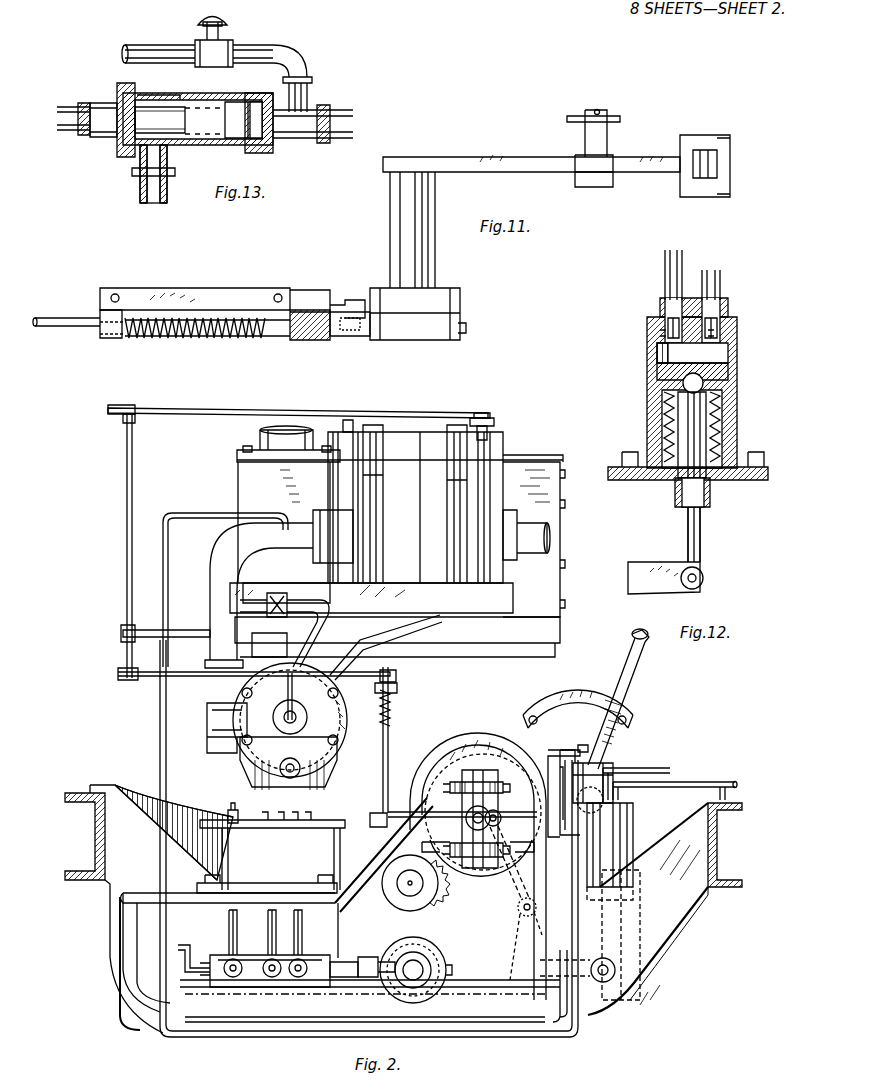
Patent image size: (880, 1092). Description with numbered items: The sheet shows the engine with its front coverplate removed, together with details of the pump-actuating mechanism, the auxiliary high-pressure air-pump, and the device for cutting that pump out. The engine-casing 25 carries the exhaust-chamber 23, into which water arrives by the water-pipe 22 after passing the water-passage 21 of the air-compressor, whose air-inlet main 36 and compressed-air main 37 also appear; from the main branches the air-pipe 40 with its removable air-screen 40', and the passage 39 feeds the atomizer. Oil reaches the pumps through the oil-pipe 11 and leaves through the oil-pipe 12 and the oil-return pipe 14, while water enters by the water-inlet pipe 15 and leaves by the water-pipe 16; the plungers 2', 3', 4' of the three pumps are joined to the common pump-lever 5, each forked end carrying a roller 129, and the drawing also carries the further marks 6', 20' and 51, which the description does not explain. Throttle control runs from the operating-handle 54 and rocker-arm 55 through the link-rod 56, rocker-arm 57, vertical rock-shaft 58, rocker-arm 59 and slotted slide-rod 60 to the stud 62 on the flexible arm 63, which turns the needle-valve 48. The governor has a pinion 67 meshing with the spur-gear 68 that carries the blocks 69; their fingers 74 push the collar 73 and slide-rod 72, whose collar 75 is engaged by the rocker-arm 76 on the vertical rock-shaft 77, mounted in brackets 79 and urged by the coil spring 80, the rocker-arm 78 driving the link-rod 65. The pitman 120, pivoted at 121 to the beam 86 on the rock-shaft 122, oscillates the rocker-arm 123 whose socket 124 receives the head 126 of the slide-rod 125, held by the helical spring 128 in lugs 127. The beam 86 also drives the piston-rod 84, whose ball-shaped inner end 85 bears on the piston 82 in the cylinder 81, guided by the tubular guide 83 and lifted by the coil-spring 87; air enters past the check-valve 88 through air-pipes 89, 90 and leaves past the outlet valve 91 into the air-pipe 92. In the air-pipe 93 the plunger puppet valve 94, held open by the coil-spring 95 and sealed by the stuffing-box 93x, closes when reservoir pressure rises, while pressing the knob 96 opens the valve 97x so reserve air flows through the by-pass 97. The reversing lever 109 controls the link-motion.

In FIG. 2, the plunger 2' is at (305, 943).
In FIG. 2, the plunger 3' is at (277, 943).
In FIG. 2, the plunger 4' is at (239, 943).
In FIG. 2, the pump-lever 5 is at (313, 985).
In FIG. 2, the valve box 6' is at (271, 856).
In FIG. 2, the oil-pipe 11 is at (300, 770).
In FIG. 2, the oil-pipe 12 is at (300, 828).
In FIG. 2, the oil-return pipe 14 is at (282, 825).
In FIG. 2, the water-inlet pipe 15 is at (205, 832).
In FIG. 2, the water-pipe 16 is at (232, 815).
In FIG. 2, the stud 20' is at (510, 430).
In FIG. 2, the water-passage 21 is at (520, 492).
In FIG. 2, the water-pipe 22 is at (350, 425).
In FIG. 2, the exhaust-chamber 23 is at (240, 463).
In FIG. 2, the engine-casing 25 is at (569, 602).
In FIG. 2, the air-inlet main 36 is at (540, 540).
In FIG. 2, the compressed-air main 37 is at (210, 548).
In FIG. 2, the passage 39 is at (208, 722).
In FIG. 2, the air-pipe 40 is at (293, 630).
In FIG. 2, the air-screen 40' is at (284, 592).
In FIG. 2, the needle-valve 48 is at (297, 718).
In FIG. 11, the bar 51 is at (218, 292).
In FIG. 2, the operating-handle 54 is at (490, 423).
In FIG. 2, the rocker-arm 55 is at (477, 412).
In FIG. 2, the link-rod 56 is at (322, 410).
In FIG. 2, the rocker-arm 57 is at (110, 415).
In FIG. 2, the vertical rock-shaft 58 is at (135, 440).
In FIG. 2, the rocker-arm 59 is at (122, 675).
In FIG. 2, the slide-rod 60 is at (150, 678).
In FIG. 2, the stud 62 is at (290, 690).
In FIG. 2, the flexible arm 63 is at (293, 690).
In FIG. 2, the link-rod 65 is at (380, 676).
In FIG. 2, the pinion 67 is at (418, 895).
In FIG. 2, the spur-gear 68 is at (498, 870).
In FIG. 2, the blocks 69 is at (482, 770).
In FIG. 2, the slide-rod 72 is at (470, 822).
In FIG. 2, the collar 73 is at (498, 826).
In FIG. 2, the fingers 74 is at (474, 850).
In FIG. 2, the collar 75 is at (490, 815).
In FIG. 2, the rocker-arm 76 is at (420, 848).
In FIG. 2, the vertical rock-shaft 77 is at (390, 745).
In FIG. 2, the rocker-arm 78 is at (430, 614).
In FIG. 2, the brackets 79 is at (388, 692).
In FIG. 2, the coil spring 80 is at (392, 708).
In FIG. 12, the cylinder 81 is at (738, 378).
In FIG. 2, the cylinder 81 is at (480, 770).
In FIG. 12, the piston 82 is at (728, 360).
In FIG. 12, the tubular guide 83 is at (710, 500).
In FIG. 12, the piston-rod 84 is at (700, 543).
In FIG. 2, the piston-rod 84 is at (650, 945).
In FIG. 12, the inner end 85 is at (652, 368).
In FIG. 11, the beam 86 is at (628, 160).
In FIG. 12, the beam 86 is at (652, 568).
In FIG. 2, the beam 86 is at (562, 1000).
In FIG. 12, the coil-spring 87 is at (725, 410).
In FIG. 12, the check-valve 88 is at (660, 334).
In FIG. 13, the air-pipe 89 is at (30, 138).
In FIG. 2, the air-pipe 89 is at (160, 758).
In FIG. 13, the air-pipe 90 is at (175, 185).
In FIG. 12, the air-pipe 90 is at (675, 262).
In FIG. 2, the air-pipe 90 is at (605, 775).
In FIG. 12, the outlet valve 91 is at (737, 326).
In FIG. 12, the air-pipe 92 is at (720, 282).
In FIG. 2, the air-pipe 92 is at (730, 782).
In FIG. 13, the air-pipe 93 is at (352, 125).
In FIG. 2, the air-pipe 93 is at (670, 768).
In FIG. 13, the stuffing-box 93x is at (180, 86).
In FIG. 13, the plunger puppet valve 94 is at (240, 118).
In FIG. 13, the coil-spring 95 is at (232, 108).
In FIG. 2, the coil-spring 95 is at (615, 760).
In FIG. 13, the knob 96 is at (222, 24).
In FIG. 13, the by-pass 97 is at (130, 66).
In FIG. 2, the by-pass 97 is at (565, 712).
In FIG. 13, the valve 97x is at (200, 44).
In FIG. 2, the valve 97x is at (586, 739).
In FIG. 2, the reversing lever 109 is at (645, 672).
In FIG. 2, the pitman 120 is at (522, 912).
In FIG. 2, the pivot 121 is at (555, 970).
In FIG. 11, the rock-shaft 122 is at (440, 272).
In FIG. 2, the rock-shaft 122 is at (450, 1000).
In FIG. 11, the rocker-arm 123 is at (375, 330).
In FIG. 2, the rocker-arm 123 is at (410, 972).
In FIG. 11, the socket 124 is at (352, 306).
In FIG. 2, the socket 124 is at (370, 958).
In FIG. 11, the slide-rod 125 is at (80, 330).
In FIG. 2, the slide-rod 125 is at (205, 1000).
In FIG. 11, the head 126 is at (330, 334).
In FIG. 2, the head 126 is at (356, 985).
In FIG. 11, the lugs 127 is at (305, 308).
In FIG. 11, the helical spring 128 is at (206, 338).
In FIG. 2, the roller 129 is at (237, 980).